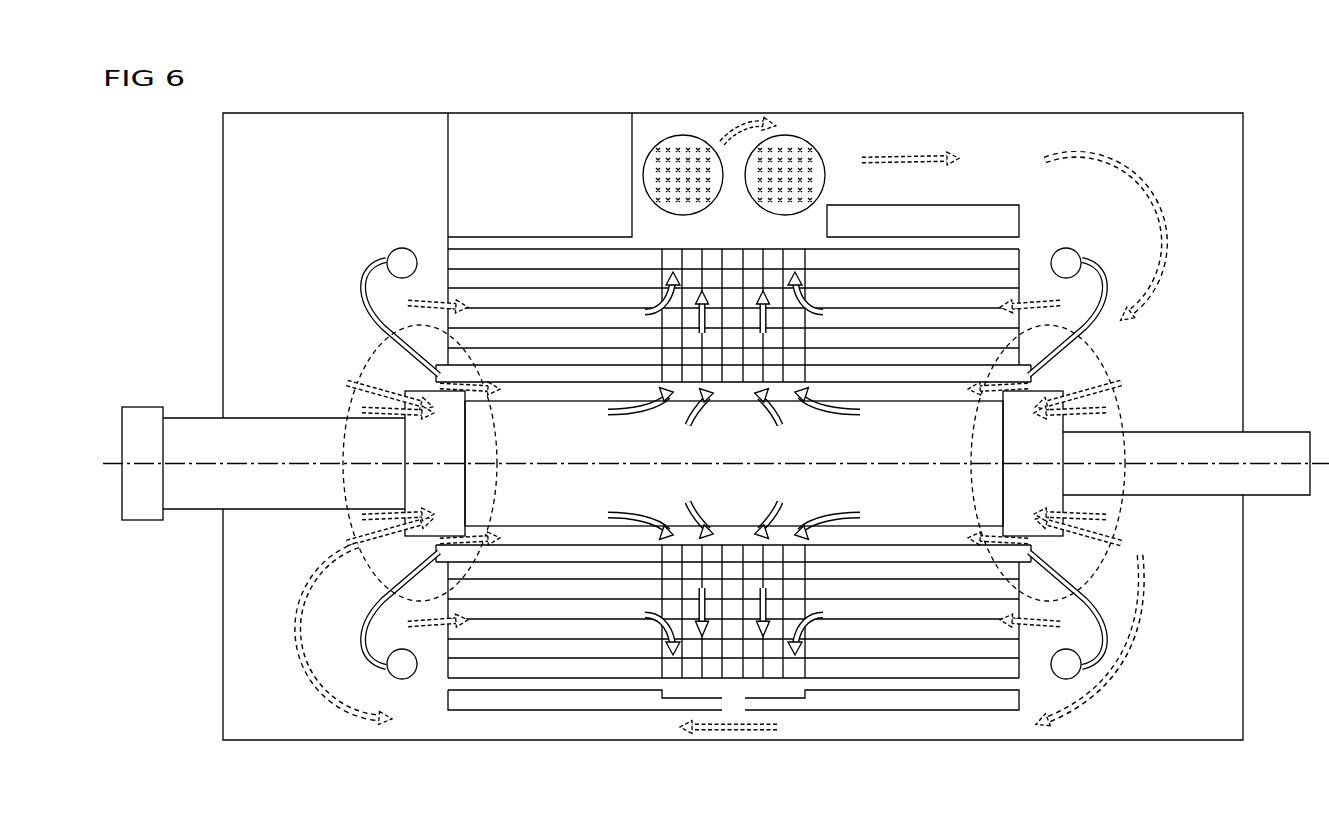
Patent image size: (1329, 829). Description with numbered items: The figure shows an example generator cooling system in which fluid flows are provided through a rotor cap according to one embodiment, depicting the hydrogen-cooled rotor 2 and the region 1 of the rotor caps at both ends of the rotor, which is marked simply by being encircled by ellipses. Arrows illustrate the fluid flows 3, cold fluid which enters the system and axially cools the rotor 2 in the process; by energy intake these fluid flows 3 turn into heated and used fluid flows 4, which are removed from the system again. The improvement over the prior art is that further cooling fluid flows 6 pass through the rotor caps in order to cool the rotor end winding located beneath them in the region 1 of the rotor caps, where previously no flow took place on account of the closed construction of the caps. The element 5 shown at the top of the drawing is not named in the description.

The region of the rotor caps 1 is at (348, 405).
The rotor 2 is at (734, 463).
The fluid flows 3 is at (429, 286).
The heated fluid flows 4 is at (756, 278).
The heat exchanger tubes 5 is at (683, 135).
The cooling fluid flows 6 is at (1118, 404).